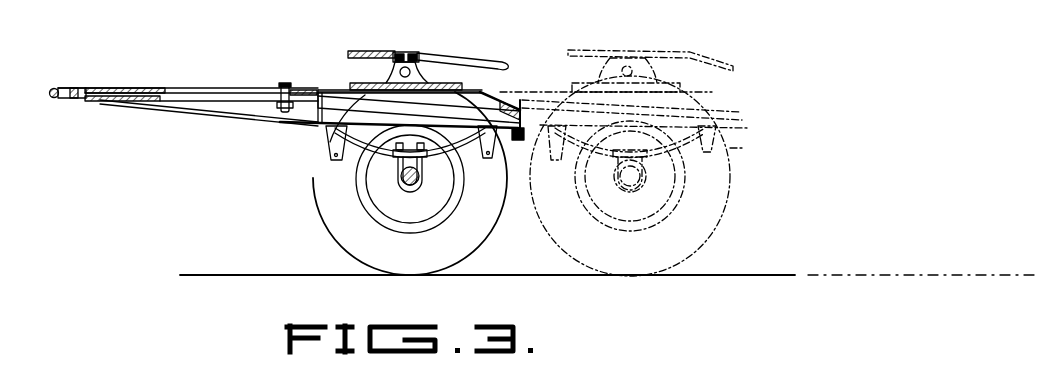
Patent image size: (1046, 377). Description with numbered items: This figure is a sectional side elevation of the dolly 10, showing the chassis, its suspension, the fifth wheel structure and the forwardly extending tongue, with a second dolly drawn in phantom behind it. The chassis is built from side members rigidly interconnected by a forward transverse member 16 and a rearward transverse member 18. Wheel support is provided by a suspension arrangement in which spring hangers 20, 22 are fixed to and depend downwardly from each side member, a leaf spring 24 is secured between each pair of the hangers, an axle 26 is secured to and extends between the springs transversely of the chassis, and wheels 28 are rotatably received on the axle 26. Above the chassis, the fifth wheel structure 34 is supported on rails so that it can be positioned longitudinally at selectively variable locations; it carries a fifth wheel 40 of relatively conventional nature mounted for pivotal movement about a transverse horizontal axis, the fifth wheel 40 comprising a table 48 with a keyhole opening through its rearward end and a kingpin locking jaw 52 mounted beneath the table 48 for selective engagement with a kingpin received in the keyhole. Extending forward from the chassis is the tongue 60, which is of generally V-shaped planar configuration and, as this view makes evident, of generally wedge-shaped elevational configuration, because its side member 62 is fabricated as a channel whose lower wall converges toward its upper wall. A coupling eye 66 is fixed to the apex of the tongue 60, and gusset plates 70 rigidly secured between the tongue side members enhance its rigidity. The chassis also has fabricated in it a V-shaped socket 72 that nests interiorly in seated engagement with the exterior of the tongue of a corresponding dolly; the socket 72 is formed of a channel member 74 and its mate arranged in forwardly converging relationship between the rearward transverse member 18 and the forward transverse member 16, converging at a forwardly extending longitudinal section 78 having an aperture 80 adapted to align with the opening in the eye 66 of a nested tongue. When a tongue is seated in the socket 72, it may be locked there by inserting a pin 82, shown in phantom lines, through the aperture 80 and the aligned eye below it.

The dolly 10 is at (237, 45).
The transverse member 16 is at (308, 124).
The transverse member 18 is at (524, 142).
The spring hanger 20 is at (339, 161).
The spring hanger 22 is at (485, 150).
The leaf spring 24 is at (437, 165).
The axle 26 is at (408, 187).
The wheel 28 is at (486, 245).
The fifth wheel structure 34 is at (340, 62).
The fifth wheel 40 is at (446, 45).
The table 48 is at (380, 51).
The kingpin locking jaw 52 is at (413, 52).
The tongue 60 is at (185, 72).
The side member 62 is at (229, 95).
The coupling eye 66 is at (62, 74).
The gusset plate 70 is at (134, 90).
The V-shaped socket 72 is at (318, 124).
The channel member 74 is at (464, 100).
The longitudinal section 78 is at (281, 86).
The aperture 80 is at (296, 90).
The pin 82 is at (287, 84).